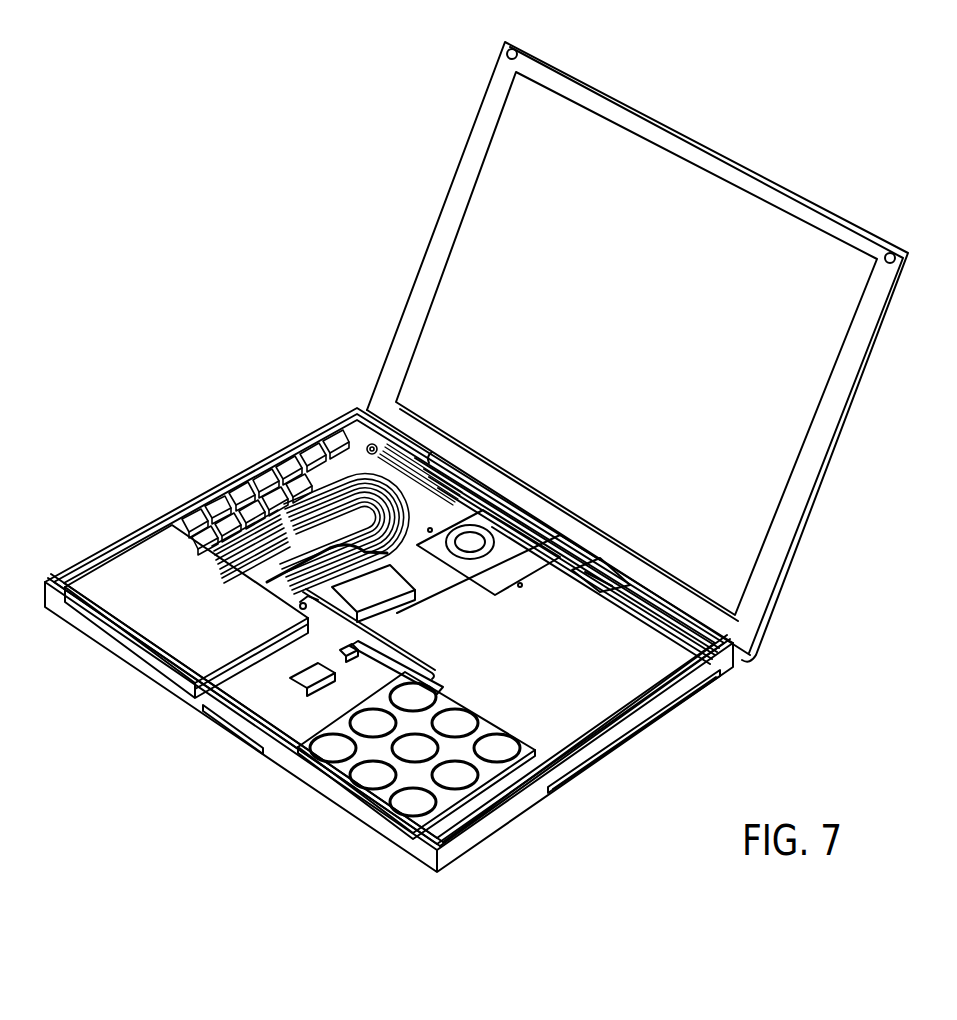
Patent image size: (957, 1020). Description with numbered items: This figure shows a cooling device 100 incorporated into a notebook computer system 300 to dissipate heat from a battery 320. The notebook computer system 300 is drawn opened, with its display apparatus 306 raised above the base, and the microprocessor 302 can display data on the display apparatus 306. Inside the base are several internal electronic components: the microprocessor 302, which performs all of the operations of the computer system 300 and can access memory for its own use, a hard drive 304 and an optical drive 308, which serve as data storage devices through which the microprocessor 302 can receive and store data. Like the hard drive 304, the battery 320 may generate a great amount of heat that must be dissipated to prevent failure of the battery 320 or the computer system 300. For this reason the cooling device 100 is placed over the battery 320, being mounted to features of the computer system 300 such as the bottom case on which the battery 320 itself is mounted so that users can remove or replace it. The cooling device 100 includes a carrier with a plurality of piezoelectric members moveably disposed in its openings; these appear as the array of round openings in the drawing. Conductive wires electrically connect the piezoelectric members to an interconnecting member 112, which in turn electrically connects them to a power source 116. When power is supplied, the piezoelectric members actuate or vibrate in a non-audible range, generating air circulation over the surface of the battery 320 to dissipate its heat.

The notebook computer system 300 is at (740, 112).
The display apparatus 306 is at (822, 480).
The hard drive 304 is at (195, 613).
The microprocessor 302 is at (386, 607).
The optical drive 308 is at (559, 685).
The interconnecting member 112 is at (406, 650).
The power source 116 is at (302, 603).
The cooling device 100 is at (490, 772).
The battery 320 is at (448, 822).